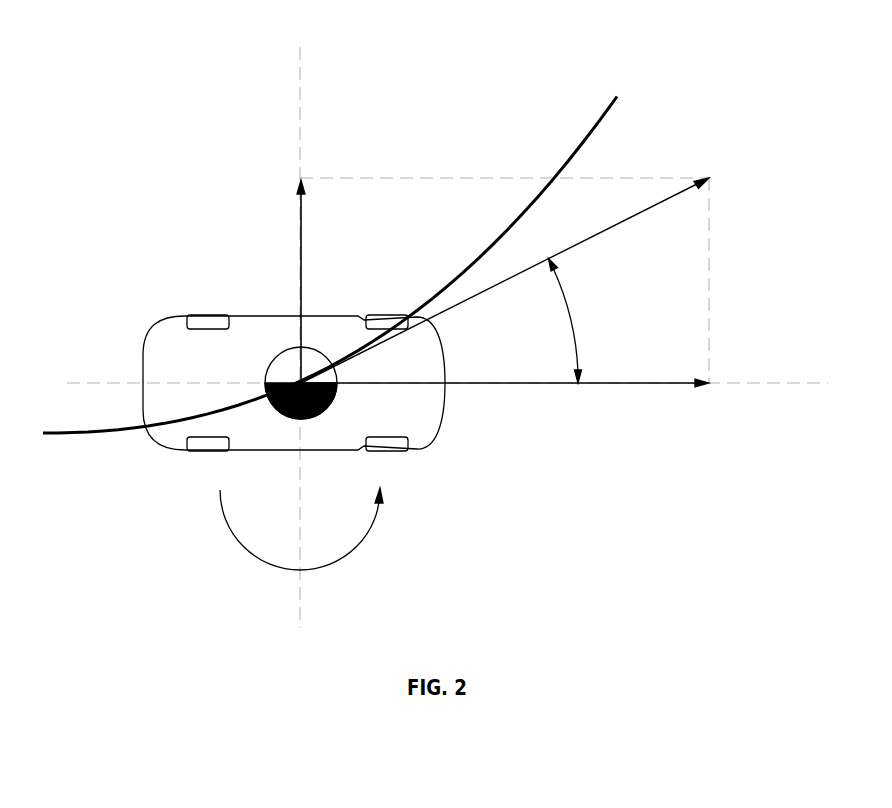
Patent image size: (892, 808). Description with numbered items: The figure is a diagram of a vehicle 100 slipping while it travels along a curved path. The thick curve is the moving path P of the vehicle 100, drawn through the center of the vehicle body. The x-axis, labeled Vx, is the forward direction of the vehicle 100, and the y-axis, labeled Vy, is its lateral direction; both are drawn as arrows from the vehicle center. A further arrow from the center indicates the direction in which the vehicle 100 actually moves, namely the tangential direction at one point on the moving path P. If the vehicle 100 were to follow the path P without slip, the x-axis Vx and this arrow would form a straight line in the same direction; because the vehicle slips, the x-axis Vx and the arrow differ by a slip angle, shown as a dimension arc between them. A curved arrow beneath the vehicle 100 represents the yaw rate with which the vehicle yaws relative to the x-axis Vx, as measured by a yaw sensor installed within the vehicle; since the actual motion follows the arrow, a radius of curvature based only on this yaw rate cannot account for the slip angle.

The vehicle 100 is at (436, 428).
The moving path P is at (594, 133).
The longitudinal velocity Vx is at (505, 406).
The lateral velocity Vy is at (279, 281).